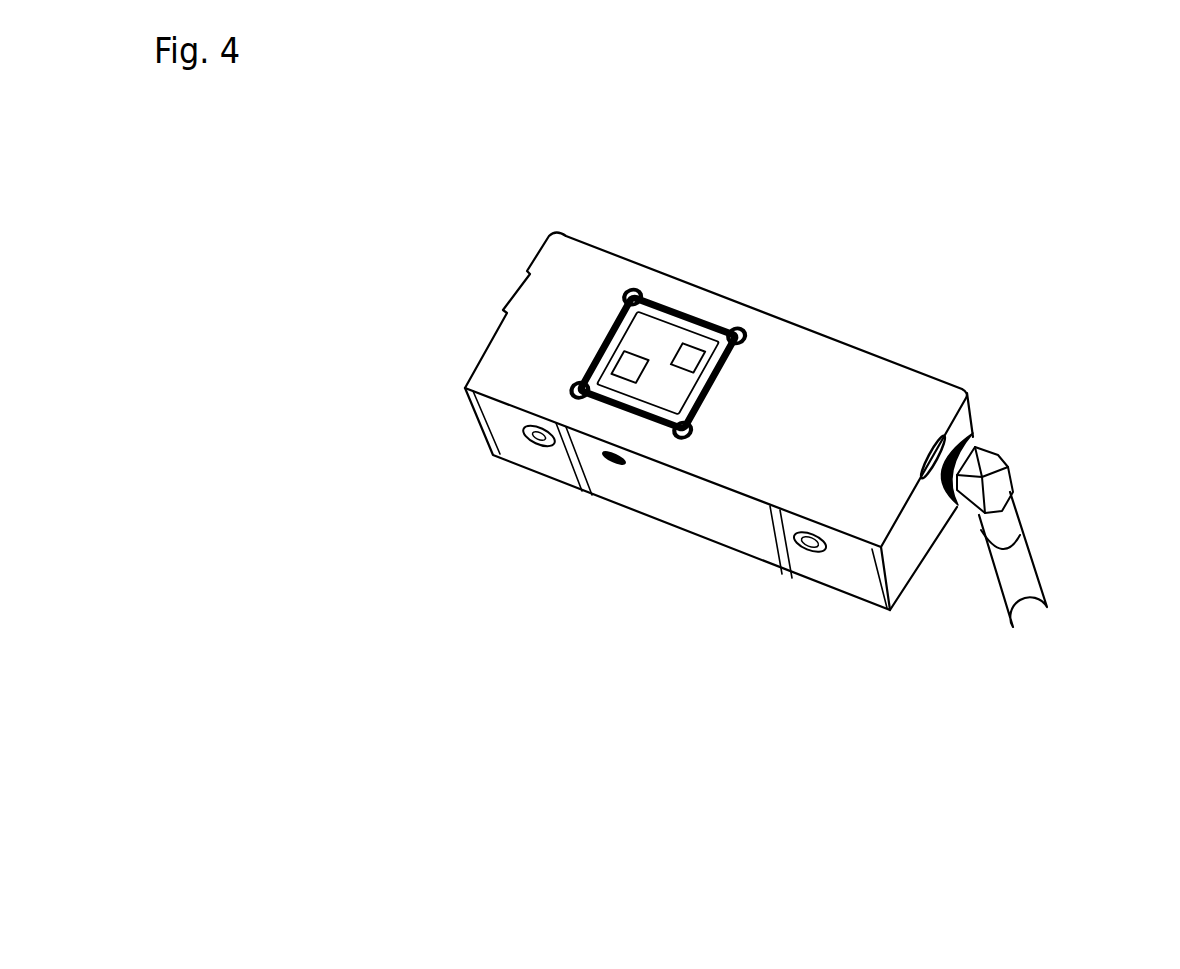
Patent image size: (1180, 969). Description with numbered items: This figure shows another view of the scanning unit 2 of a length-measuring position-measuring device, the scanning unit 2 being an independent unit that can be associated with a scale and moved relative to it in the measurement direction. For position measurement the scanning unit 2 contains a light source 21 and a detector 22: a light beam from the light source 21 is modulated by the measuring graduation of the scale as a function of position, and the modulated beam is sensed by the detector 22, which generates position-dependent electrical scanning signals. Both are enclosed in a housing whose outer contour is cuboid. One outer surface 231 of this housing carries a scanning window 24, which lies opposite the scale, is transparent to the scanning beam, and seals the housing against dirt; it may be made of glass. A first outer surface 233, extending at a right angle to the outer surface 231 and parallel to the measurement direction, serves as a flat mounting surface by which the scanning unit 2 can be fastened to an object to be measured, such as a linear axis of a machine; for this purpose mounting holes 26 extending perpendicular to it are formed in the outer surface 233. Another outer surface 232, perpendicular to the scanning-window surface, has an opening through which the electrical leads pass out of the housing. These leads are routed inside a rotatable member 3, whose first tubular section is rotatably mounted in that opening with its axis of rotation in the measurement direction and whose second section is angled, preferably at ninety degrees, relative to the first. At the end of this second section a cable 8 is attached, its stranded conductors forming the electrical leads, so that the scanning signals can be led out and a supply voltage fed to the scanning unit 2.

The scanning unit 2 is at (795, 431).
The rotatable member 3 is at (1007, 488).
The cable 8 is at (1030, 605).
The light source 21 is at (629, 368).
The detector 22 is at (683, 365).
The scanning window 24 is at (638, 325).
The mounting holes 26 is at (530, 433).
The outer surface 231 is at (565, 272).
The outer surface 232 is at (903, 547).
The first outer surface 233 is at (633, 490).